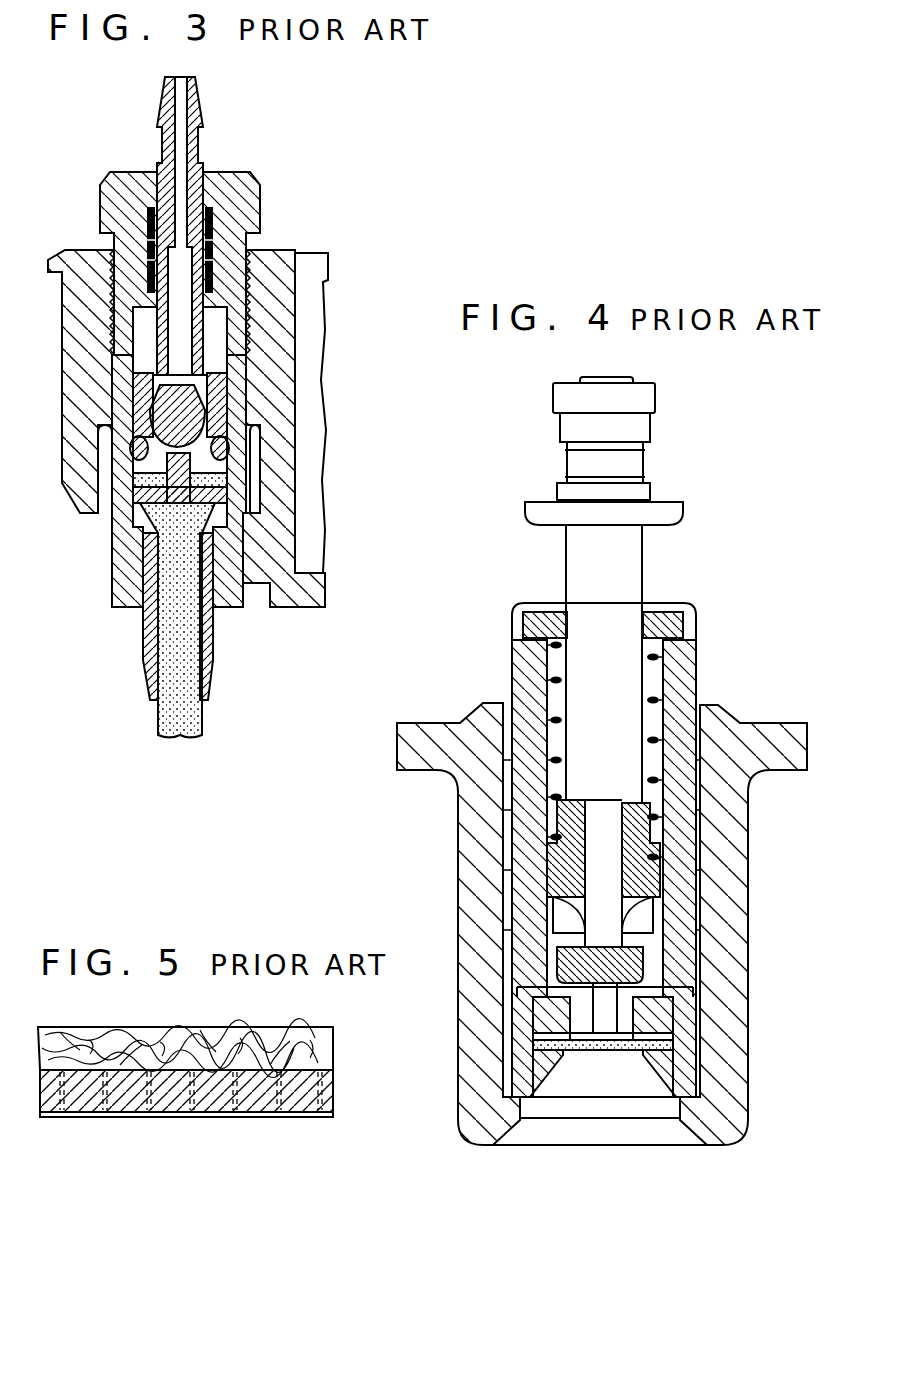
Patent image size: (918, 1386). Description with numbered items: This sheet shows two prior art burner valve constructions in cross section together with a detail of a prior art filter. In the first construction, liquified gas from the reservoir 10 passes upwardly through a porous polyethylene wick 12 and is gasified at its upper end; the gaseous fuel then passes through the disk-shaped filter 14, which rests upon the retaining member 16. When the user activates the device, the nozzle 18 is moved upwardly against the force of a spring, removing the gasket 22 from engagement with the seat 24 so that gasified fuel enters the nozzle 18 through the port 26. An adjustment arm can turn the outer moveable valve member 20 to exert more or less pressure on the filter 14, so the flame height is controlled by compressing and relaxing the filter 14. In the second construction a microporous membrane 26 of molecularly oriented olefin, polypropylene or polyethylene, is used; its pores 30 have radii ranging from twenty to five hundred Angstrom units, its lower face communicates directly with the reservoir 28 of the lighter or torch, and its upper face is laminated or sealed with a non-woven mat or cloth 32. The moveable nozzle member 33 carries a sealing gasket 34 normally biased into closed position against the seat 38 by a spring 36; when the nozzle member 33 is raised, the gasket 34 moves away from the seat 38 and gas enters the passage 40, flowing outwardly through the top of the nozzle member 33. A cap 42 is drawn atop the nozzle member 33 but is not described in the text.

In FIG. 3, the reservoir 10 is at (110, 734).
In FIG. 3, the porous polyethylene wick 12 is at (185, 717).
In FIG. 3, the disk-shaped filter 14 is at (225, 488).
In FIG. 3, the retaining member 16 is at (222, 504).
In FIG. 3, the nozzle 18 is at (198, 104).
In FIG. 3, the outer moveable valve member 20 is at (124, 178).
In FIG. 3, the gasket 22 is at (190, 407).
In FIG. 3, the seat 24 is at (253, 432).
In FIG. 3, the port / microporous membrane 26 is at (200, 362).
In FIG. 4, the port / microporous membrane 26 is at (673, 1050).
In FIG. 5, the port / microporous membrane 26 is at (333, 1092).
In FIG. 4, the reservoir 28 is at (580, 1209).
In FIG. 5, the pores 30 is at (310, 1119).
In FIG. 4, the non-woven mat or cloth 32 is at (640, 1040).
In FIG. 5, the non-woven mat or cloth 32 is at (318, 1028).
In FIG. 4, the moveable nozzle member 33 is at (563, 882).
In FIG. 4, the sealing gasket 34 is at (560, 963).
In FIG. 4, the spring 36 is at (550, 680).
In FIG. 4, the seat 38 is at (557, 1000).
In FIG. 4, the passage 40 is at (608, 857).
In FIG. 4, the cap / actuator button 42 is at (652, 403).